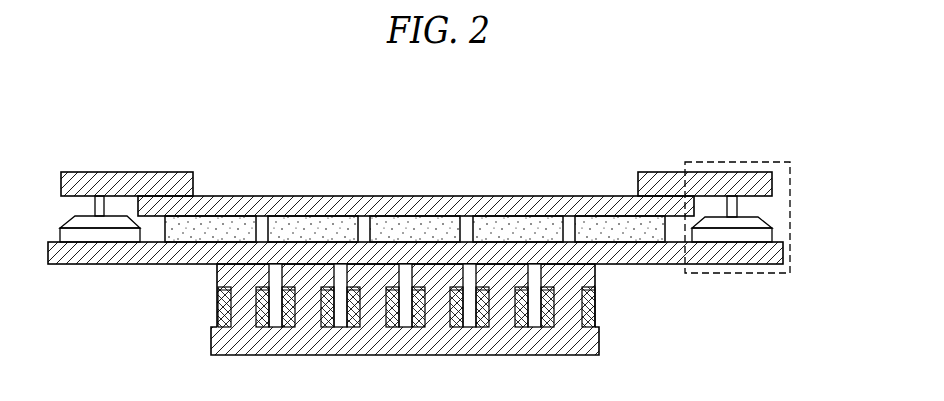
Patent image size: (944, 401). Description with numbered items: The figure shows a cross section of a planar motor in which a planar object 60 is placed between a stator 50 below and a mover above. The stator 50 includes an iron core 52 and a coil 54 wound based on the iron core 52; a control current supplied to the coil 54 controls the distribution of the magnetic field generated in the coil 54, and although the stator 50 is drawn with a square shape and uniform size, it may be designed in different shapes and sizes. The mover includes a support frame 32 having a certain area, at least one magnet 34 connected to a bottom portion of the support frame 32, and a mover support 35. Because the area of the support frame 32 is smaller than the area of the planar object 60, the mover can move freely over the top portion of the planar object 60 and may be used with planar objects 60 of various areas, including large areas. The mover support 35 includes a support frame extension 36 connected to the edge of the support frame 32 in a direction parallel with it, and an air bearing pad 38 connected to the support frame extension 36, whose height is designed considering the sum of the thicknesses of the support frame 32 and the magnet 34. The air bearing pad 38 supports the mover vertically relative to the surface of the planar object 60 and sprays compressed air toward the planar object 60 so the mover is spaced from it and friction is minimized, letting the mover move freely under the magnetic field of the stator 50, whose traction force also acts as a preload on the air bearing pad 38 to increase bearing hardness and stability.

The support frame 32 is at (570, 203).
The magnet 34 is at (638, 230).
The mover support 35 is at (750, 274).
The support frame extension 36 is at (757, 183).
The air bearing pad 38 is at (767, 222).
The stator 50 is at (413, 322).
The iron core 52 is at (592, 340).
The coil 54 is at (588, 308).
The planar object 60 is at (70, 255).